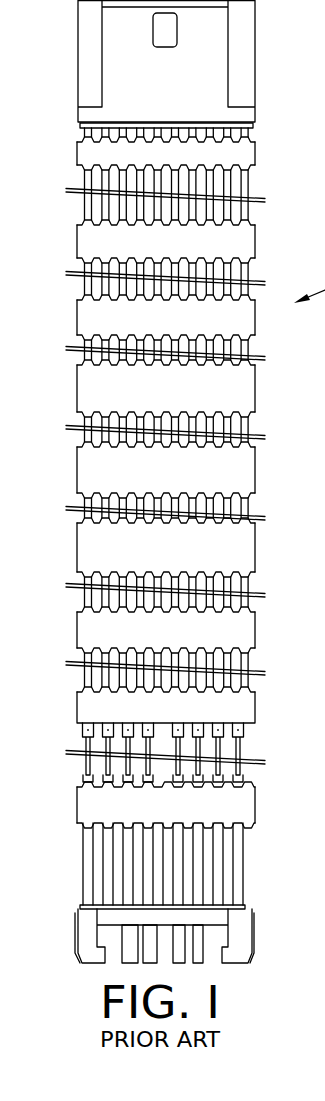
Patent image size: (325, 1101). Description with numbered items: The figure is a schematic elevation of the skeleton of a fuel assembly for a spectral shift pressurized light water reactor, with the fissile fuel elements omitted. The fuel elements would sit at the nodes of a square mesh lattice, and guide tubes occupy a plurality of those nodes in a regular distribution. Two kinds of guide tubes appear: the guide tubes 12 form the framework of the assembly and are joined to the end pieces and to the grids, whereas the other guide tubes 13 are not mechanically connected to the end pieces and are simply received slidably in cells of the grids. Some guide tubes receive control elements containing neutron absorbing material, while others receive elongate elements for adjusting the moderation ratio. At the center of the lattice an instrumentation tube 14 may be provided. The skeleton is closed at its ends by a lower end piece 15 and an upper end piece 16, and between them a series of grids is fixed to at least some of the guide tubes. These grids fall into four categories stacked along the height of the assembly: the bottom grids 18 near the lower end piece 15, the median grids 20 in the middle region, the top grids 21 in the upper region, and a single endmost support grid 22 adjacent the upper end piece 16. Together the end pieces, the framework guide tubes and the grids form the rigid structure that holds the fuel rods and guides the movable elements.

The guide tubes 12 is at (238, 748).
The guide tubes 13 is at (197, 582).
The instrumentation tube 14 is at (157, 430).
The lower end piece 15 is at (250, 910).
The upper end piece 16 is at (242, 112).
The bottom grids 18 is at (92, 802).
The median grids 20 is at (92, 555).
The top grids 21 is at (92, 310).
The endmost support grid 22 is at (92, 158).